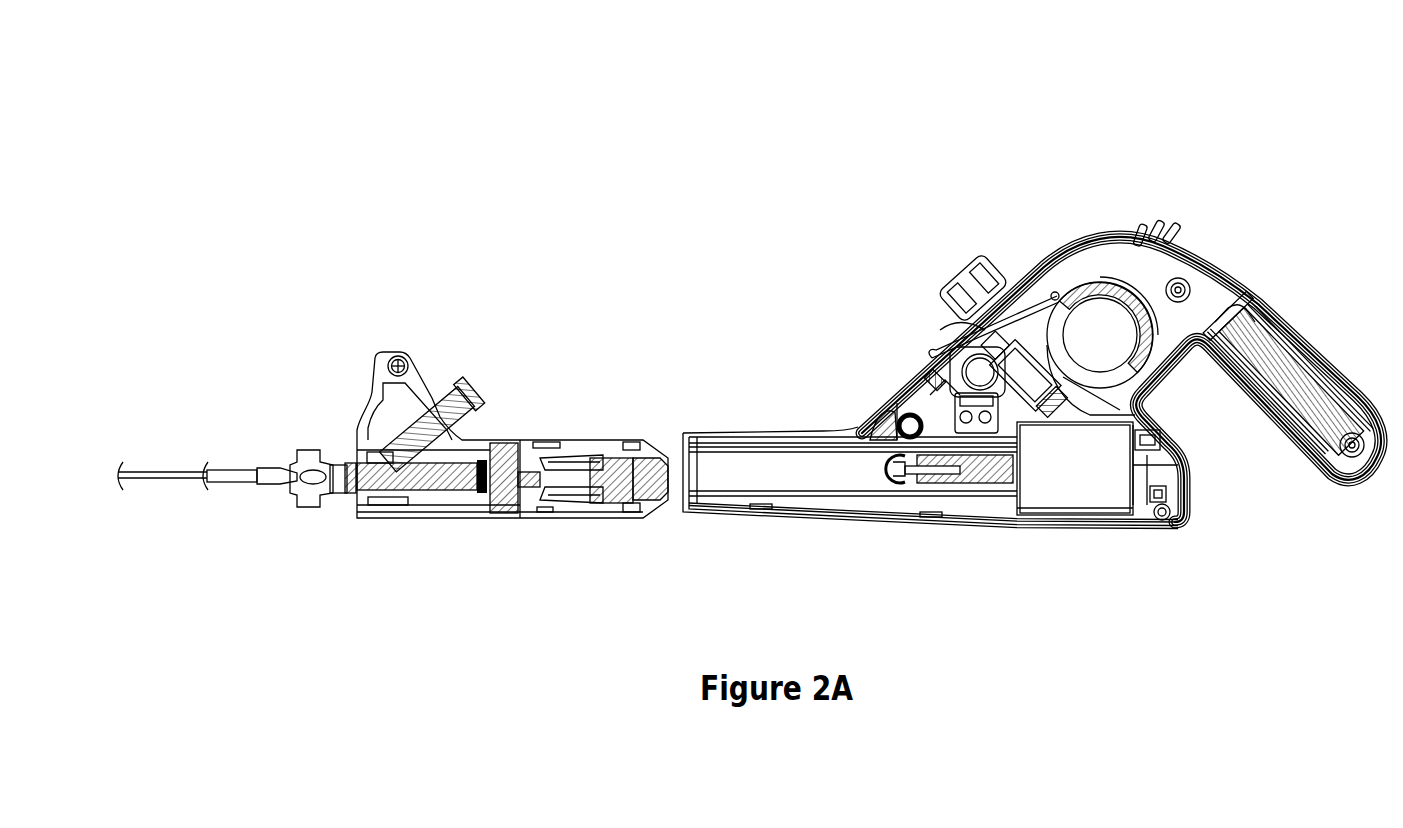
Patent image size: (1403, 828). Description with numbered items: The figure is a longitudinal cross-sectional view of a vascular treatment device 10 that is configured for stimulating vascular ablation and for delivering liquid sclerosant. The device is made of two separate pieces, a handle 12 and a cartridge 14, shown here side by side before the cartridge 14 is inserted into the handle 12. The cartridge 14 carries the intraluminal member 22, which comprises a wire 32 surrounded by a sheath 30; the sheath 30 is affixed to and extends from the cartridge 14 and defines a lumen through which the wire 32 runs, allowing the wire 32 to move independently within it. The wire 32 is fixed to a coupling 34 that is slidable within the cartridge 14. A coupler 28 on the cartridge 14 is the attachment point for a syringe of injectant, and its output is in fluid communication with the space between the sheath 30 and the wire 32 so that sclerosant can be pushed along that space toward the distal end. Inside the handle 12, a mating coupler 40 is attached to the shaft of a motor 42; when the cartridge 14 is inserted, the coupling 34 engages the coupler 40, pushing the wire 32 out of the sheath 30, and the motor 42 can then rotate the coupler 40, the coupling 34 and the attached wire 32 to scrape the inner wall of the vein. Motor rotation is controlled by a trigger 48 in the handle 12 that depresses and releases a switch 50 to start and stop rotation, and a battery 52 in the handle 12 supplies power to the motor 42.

The vascular treatment device 10 is at (504, 74).
The handle 12 is at (1220, 163).
The cartridge 14 is at (328, 315).
The intraluminal member 22 is at (189, 406).
The coupler 28 is at (460, 385).
The sheath 30 is at (230, 485).
The wire 32 is at (148, 482).
The coupling 34 is at (597, 493).
The coupler 40 is at (985, 478).
The motor 42 is at (1093, 497).
The trigger 48 is at (1063, 283).
The switch 50 is at (965, 333).
The battery 52 is at (1300, 370).